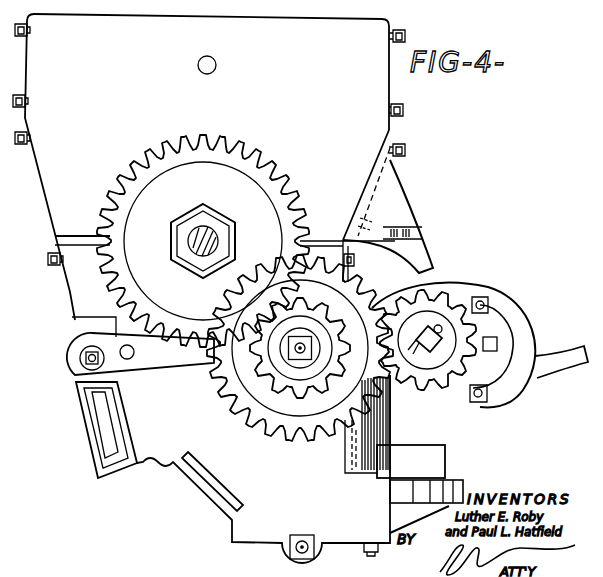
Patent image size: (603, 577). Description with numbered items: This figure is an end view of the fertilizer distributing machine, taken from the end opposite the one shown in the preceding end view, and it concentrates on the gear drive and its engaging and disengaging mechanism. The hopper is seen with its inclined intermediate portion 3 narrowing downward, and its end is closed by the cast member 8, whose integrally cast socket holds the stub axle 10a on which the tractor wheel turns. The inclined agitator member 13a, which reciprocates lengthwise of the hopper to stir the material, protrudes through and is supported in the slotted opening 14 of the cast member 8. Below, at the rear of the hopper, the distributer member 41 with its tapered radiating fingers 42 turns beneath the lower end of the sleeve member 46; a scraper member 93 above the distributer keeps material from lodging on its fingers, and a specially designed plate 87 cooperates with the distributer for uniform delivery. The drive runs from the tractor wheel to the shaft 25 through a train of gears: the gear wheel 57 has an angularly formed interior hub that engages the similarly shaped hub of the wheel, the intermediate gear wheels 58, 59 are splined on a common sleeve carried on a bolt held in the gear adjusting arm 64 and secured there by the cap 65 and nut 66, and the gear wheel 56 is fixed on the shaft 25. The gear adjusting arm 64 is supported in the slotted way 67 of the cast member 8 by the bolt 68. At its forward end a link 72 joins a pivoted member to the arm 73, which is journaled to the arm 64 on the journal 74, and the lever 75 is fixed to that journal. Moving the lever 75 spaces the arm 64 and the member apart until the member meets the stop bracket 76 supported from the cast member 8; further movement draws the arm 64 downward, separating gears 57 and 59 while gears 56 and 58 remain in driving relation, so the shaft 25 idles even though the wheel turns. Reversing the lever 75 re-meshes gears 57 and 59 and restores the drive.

The intermediate portion of the hopper 3 is at (46, 189).
The cast member 8 is at (217, 175).
The stub axle 10a is at (209, 230).
The agitator member 13a is at (206, 471).
The slotted opening 14 is at (228, 504).
The shaft 25 is at (432, 348).
The distributer member 41 is at (425, 481).
The radiating fingers 42 is at (446, 506).
The sleeve member 46 is at (375, 422).
The gear wheel 56 is at (441, 306).
The gear wheel 57 is at (203, 241).
The intermediate gear wheel 58 is at (347, 286).
The intermediate gear wheel 59 is at (338, 321).
The gear adjusting arm 64 is at (160, 362).
The cap 65 is at (292, 352).
The nut 66 is at (302, 358).
The slotted way 67 is at (98, 402).
The bolt 68 is at (84, 368).
The link 72 is at (498, 313).
The arm 73 is at (469, 377).
The journal 74 is at (499, 344).
The lever 75 is at (543, 372).
The stop bracket 76 is at (424, 250).
The plate 87 is at (433, 497).
The scraper member 93 is at (430, 461).